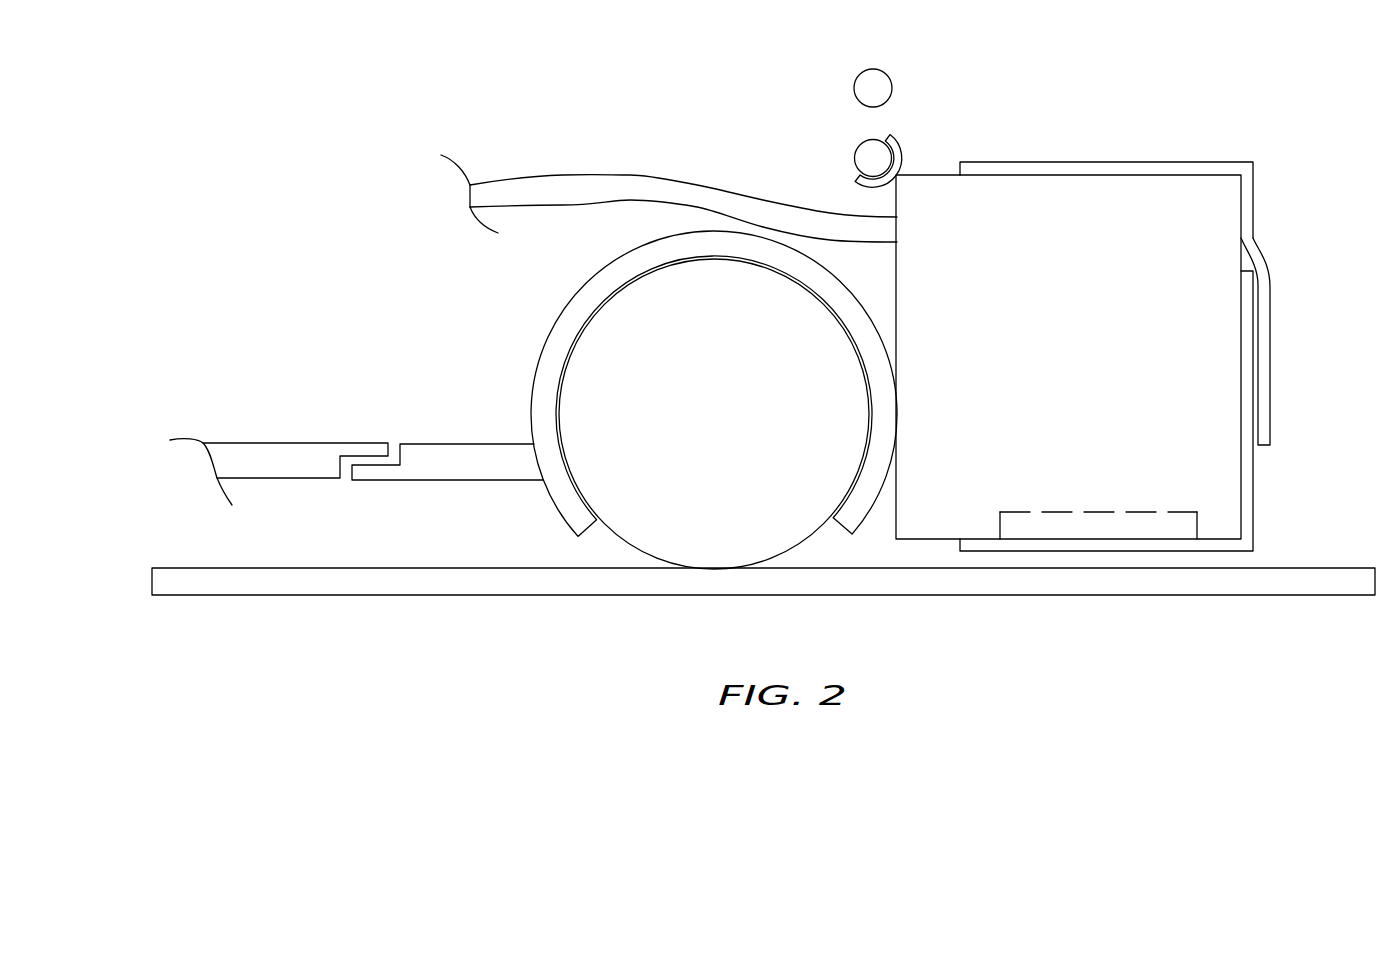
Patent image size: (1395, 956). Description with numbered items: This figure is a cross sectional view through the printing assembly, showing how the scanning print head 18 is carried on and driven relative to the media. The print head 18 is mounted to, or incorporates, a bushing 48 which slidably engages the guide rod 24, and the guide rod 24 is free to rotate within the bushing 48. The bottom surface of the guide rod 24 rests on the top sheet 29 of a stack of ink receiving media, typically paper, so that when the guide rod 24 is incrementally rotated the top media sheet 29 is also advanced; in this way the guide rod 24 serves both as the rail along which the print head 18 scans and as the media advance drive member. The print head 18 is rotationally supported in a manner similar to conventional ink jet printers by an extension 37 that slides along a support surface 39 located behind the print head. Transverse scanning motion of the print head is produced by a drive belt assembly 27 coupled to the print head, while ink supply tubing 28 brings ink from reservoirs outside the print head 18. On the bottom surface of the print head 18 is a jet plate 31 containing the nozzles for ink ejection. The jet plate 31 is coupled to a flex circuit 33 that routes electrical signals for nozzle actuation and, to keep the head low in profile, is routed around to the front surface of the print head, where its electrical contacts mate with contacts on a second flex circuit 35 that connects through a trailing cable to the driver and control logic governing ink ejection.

The ink jet print head 18 is at (1103, 355).
The guide rod 24 is at (719, 420).
The drive belt assembly 27 is at (855, 160).
The ink supply tubing 28 is at (608, 175).
The ink receiving media sheet 29 is at (362, 595).
The jet plate 31 is at (1103, 512).
The flex circuit 33 is at (1253, 496).
The second flex circuit 35 is at (1105, 162).
The extension 37 is at (466, 444).
The support surface 39 is at (291, 443).
The bushing 48 is at (542, 351).